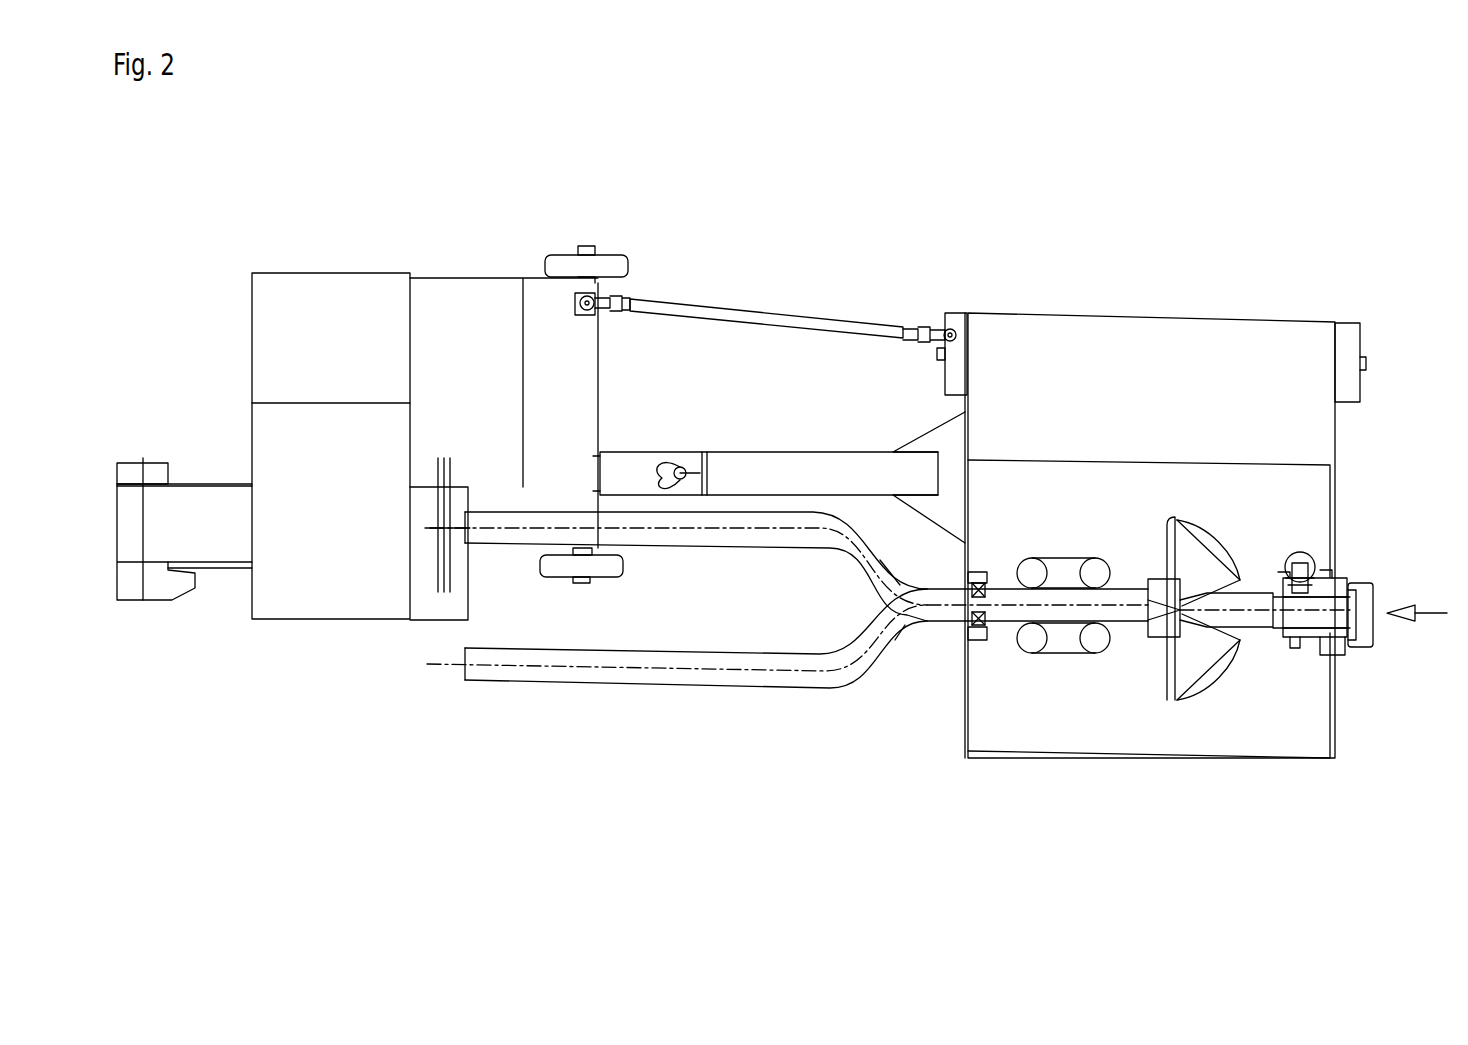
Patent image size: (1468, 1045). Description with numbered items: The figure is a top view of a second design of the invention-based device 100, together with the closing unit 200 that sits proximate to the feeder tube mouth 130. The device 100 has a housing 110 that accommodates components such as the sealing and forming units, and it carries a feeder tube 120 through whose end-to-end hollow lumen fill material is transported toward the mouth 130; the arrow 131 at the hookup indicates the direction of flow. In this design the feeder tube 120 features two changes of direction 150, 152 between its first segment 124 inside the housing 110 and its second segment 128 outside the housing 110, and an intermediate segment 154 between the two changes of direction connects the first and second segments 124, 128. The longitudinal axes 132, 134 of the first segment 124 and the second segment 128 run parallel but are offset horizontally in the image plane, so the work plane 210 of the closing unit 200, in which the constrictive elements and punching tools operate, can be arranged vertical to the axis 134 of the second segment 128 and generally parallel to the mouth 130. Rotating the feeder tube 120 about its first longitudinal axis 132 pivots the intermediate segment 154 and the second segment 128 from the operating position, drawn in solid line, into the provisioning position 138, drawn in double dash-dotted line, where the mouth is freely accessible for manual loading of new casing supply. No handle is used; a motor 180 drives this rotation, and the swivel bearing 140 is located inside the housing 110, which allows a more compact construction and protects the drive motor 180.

The device 100 is at (1163, 308).
The housing 110 is at (1336, 514).
The feeder tube 120 is at (1002, 628).
The first segment 124 is at (1120, 588).
The second segment 128 is at (742, 516).
The mouth 130 is at (457, 487).
The arrow 131 is at (1432, 612).
The longitudinal axis 132 is at (1122, 608).
The longitudinal axis 134 is at (678, 530).
The provisioning position 138 is at (633, 706).
The swivel bearing 140 is at (1312, 655).
The change of direction 150 is at (915, 633).
The change of direction 152 is at (838, 500).
The intermediate segment 154 is at (860, 578).
The motor 180 is at (1300, 552).
The closing unit 200 is at (473, 262).
The work plane 210 is at (437, 527).